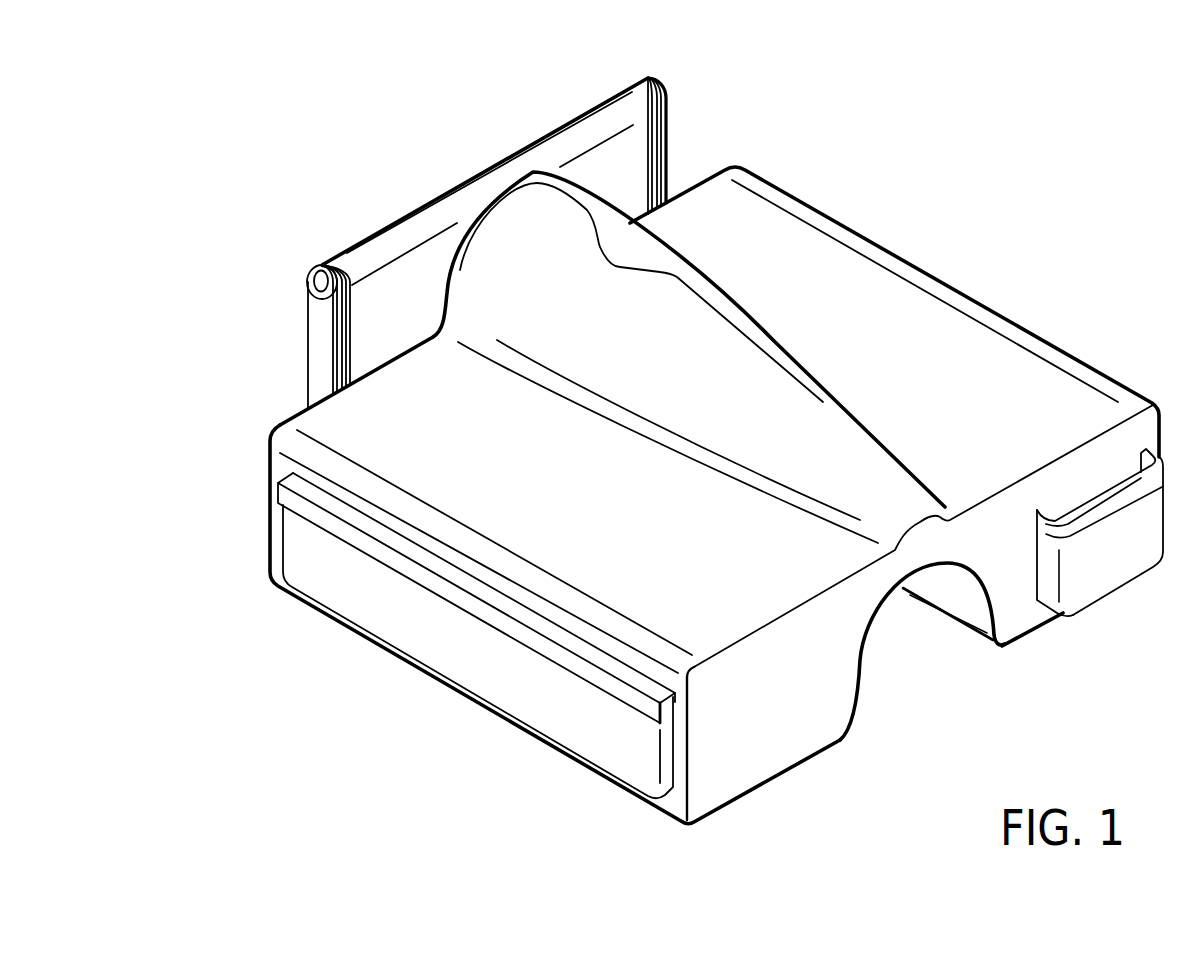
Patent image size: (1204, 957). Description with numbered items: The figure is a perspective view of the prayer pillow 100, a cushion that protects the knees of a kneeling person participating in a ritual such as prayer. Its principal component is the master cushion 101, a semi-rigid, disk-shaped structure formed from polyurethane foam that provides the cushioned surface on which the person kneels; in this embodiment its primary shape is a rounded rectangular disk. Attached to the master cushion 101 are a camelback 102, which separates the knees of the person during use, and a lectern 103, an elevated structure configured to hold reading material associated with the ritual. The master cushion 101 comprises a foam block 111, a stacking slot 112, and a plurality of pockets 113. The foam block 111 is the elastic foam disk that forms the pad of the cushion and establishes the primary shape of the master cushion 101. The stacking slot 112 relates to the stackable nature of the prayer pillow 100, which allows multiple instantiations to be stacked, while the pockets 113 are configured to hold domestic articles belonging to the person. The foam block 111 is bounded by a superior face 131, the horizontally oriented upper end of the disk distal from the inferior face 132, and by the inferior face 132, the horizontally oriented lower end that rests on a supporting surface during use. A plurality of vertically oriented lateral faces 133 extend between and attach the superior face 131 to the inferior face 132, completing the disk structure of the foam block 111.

The prayer pillow 100 is at (263, 124).
The master cushion 101 is at (936, 282).
The camelback 102 is at (662, 302).
The lectern 103 is at (510, 155).
The foam block 111 is at (1018, 415).
The stacking slot 112 is at (860, 660).
The pockets 113 is at (640, 738).
The superior face 131 is at (327, 425).
The inferior face 132 is at (588, 801).
The lateral faces 133 is at (703, 800).